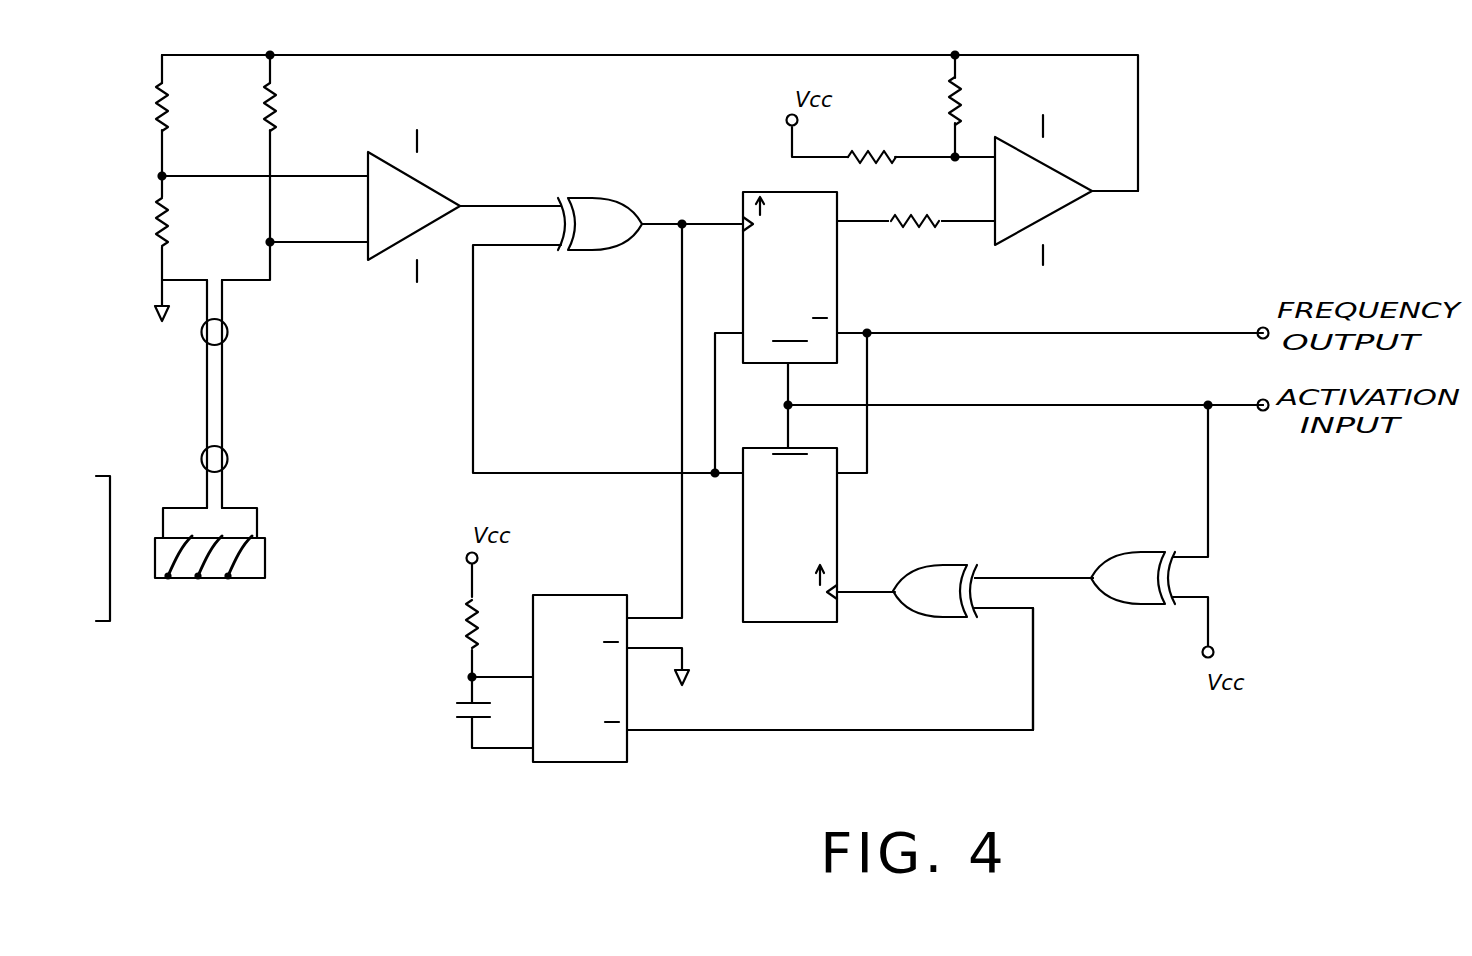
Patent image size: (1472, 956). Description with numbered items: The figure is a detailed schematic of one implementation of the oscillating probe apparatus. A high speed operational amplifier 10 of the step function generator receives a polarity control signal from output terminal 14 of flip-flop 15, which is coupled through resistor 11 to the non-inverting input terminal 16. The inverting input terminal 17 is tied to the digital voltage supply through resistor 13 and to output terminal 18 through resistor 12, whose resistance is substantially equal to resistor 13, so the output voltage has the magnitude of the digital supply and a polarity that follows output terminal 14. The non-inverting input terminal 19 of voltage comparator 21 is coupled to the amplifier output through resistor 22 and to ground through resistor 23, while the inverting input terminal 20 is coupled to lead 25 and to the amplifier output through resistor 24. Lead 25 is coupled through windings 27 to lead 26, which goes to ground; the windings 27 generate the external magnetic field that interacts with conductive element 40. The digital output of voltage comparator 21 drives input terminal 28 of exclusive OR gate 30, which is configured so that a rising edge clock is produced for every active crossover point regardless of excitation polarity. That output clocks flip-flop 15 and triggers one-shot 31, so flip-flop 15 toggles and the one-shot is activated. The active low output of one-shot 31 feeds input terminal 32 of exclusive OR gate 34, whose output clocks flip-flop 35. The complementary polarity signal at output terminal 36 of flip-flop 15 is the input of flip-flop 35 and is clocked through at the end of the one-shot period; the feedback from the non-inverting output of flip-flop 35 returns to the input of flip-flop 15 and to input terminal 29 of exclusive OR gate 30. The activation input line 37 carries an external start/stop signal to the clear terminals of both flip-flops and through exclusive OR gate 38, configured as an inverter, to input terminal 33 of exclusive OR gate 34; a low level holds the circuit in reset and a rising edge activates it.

The high speed operational amplifier 10 is at (1060, 214).
The resistor 11 is at (911, 226).
The resistor 12 is at (955, 89).
The resistor 13 is at (858, 151).
The output terminal 14 is at (838, 216).
The flip-flop 15 is at (838, 288).
The non-inverting input terminal 16 is at (967, 226).
The inverting input terminal 17 is at (973, 161).
The output terminal 18 is at (1107, 188).
The non-inverting input terminal 19 is at (303, 176).
The inverting input terminal 20 is at (343, 243).
The voltage comparator 21 is at (448, 188).
The resistor 22 is at (166, 121).
The resistor 23 is at (168, 237).
The resistor 24 is at (274, 111).
The lead 25 is at (223, 371).
The lead 26 is at (207, 407).
The windings 27 is at (223, 578).
The input terminal 28 is at (530, 204).
The input terminal 29 is at (473, 297).
The exclusive OR gate 30 is at (603, 251).
The one-shot 31 is at (567, 595).
The input terminal 32 is at (1007, 613).
The input terminal 33 is at (998, 578).
The exclusive OR gate 34 is at (930, 621).
The flip-flop 35 is at (837, 531).
The output terminal 36 is at (848, 337).
The activation input line 37 is at (1245, 401).
The exclusive OR gate 38 is at (1120, 553).
The conductive element 40 is at (110, 595).